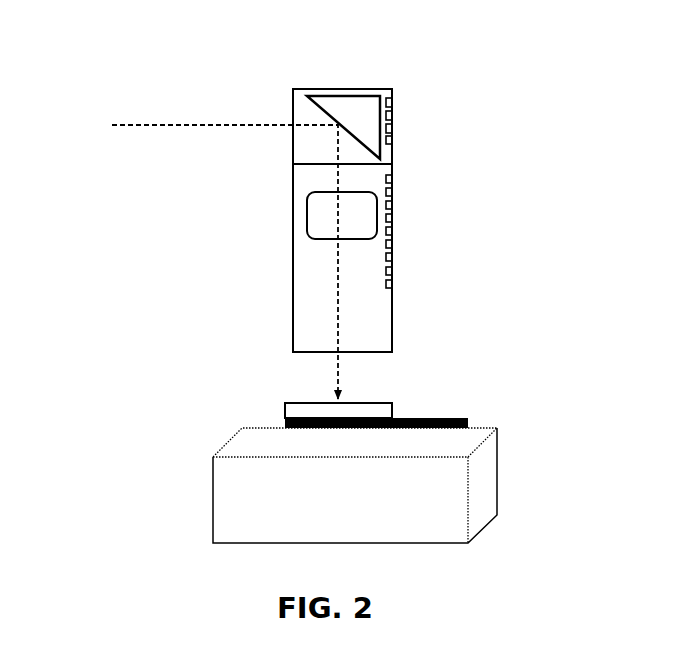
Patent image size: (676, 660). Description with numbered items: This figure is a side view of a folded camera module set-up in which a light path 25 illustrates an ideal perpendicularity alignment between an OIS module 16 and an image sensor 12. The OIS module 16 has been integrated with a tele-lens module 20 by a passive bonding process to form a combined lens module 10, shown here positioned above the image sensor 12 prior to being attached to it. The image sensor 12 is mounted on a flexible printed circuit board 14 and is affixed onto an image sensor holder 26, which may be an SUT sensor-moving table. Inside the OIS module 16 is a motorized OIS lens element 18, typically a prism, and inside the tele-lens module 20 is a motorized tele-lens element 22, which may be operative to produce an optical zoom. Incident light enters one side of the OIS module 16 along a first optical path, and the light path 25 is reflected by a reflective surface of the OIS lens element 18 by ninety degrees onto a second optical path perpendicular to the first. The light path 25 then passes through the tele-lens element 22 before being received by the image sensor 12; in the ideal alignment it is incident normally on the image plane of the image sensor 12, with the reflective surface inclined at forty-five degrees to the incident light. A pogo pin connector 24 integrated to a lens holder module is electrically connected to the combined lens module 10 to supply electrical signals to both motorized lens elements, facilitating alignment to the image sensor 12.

The combined lens module 10 is at (226, 252).
The image sensor 12 is at (284, 403).
The flexible printed circuit board 14 is at (454, 417).
The OIS module 16 is at (289, 101).
The motorized OIS lens element 18 is at (356, 107).
The tele-lens module 20 is at (292, 312).
The motorized tele-lens element 22 is at (306, 212).
The pogo pin connector 24 is at (393, 124).
The light path 25 is at (158, 125).
The image sensor holder 26 is at (446, 488).